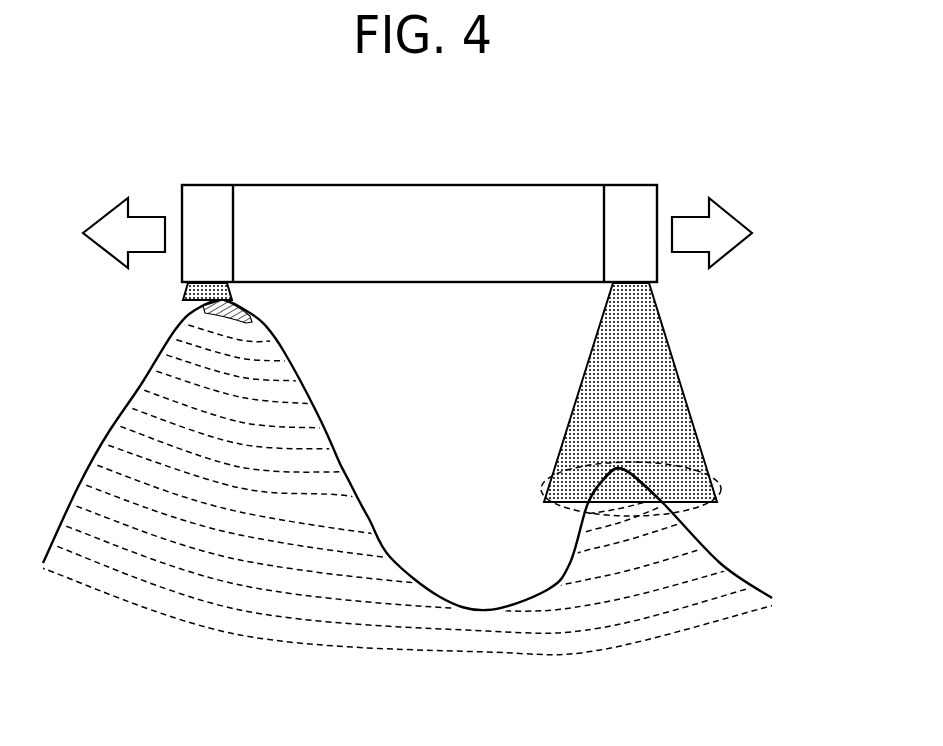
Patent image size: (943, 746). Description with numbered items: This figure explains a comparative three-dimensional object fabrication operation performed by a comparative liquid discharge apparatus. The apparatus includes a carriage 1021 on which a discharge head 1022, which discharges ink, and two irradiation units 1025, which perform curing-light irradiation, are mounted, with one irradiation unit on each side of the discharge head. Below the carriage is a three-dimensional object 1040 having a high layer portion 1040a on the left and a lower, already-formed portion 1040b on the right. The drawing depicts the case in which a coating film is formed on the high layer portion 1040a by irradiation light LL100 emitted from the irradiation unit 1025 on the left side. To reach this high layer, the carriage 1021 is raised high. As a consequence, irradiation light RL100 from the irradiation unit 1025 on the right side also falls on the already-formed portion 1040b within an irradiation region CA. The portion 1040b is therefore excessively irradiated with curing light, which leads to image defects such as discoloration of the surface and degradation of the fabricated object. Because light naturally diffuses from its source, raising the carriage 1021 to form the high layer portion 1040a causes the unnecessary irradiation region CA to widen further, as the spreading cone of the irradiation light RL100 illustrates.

The carriage 1021 is at (419, 181).
The discharge head 1022 is at (437, 205).
The irradiation unit 1025 is at (203, 185).
The irradiation light LL100 is at (186, 289).
The irradiation light RL100 is at (668, 350).
The three-dimensional object 1040 is at (429, 469).
The high layer portion 1040a is at (250, 314).
The already-formed portion 1040b is at (640, 483).
The irradiation region CA is at (718, 514).